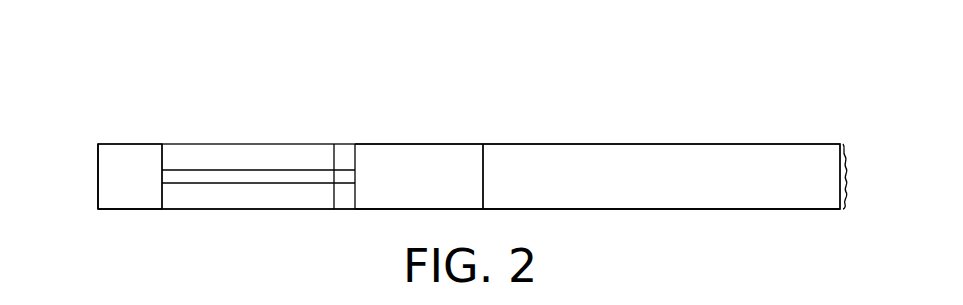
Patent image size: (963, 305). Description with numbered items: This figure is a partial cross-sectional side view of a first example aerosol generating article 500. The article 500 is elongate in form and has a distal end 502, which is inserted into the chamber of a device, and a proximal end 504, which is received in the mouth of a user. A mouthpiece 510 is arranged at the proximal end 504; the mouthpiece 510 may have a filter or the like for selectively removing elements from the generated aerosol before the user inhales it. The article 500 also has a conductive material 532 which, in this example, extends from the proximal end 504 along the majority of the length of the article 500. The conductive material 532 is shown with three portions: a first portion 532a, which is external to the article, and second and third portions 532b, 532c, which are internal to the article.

The aerosol generating article 500 is at (78, 60).
The distal end 502 is at (847, 172).
The proximal end 504 is at (98, 168).
The mouthpiece 510 is at (98, 203).
The conductive material 532 is at (448, 83).
The first portion of the conductive material 532a is at (138, 160).
The second portion of the conductive material 532b is at (270, 177).
The third portion of the conductive material 532c is at (423, 163).